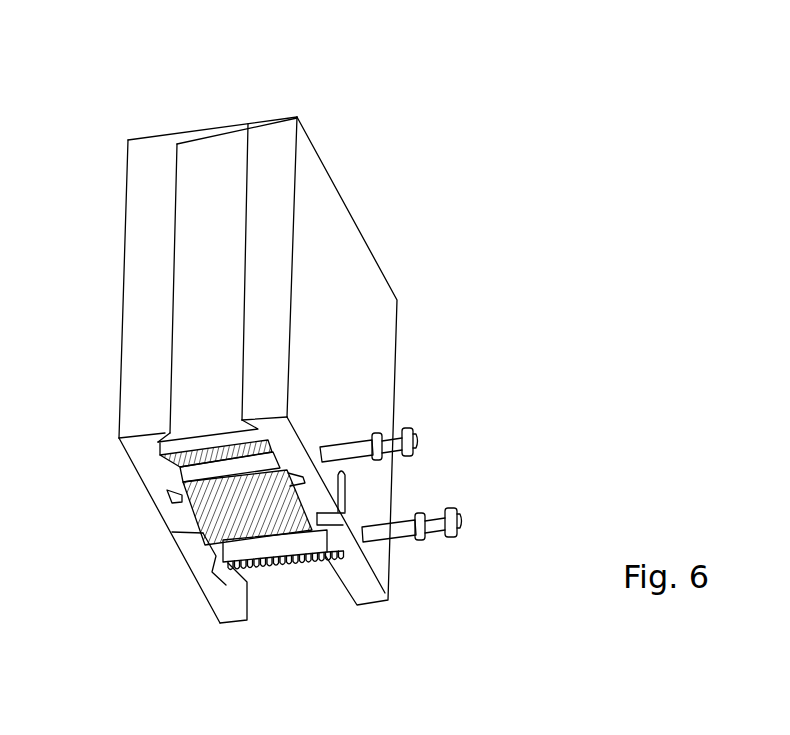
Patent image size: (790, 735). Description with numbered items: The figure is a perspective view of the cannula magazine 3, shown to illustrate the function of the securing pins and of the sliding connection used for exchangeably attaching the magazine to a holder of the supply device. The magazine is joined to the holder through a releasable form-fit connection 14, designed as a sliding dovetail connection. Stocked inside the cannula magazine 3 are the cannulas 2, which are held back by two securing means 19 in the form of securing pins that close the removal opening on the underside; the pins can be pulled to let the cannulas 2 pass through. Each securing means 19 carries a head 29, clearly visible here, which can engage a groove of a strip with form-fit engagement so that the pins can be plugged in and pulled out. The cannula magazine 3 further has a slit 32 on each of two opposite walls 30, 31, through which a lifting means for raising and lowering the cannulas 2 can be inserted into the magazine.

The cannula magazine 3 is at (129, 90).
The releasable form-fit connection 14 is at (220, 230).
The wall 30 is at (337, 260).
The wall 31 is at (121, 302).
The head 29 is at (408, 428).
The securing means 19 is at (419, 443).
The slit 32 is at (192, 535).
The cannula 2 is at (255, 527).